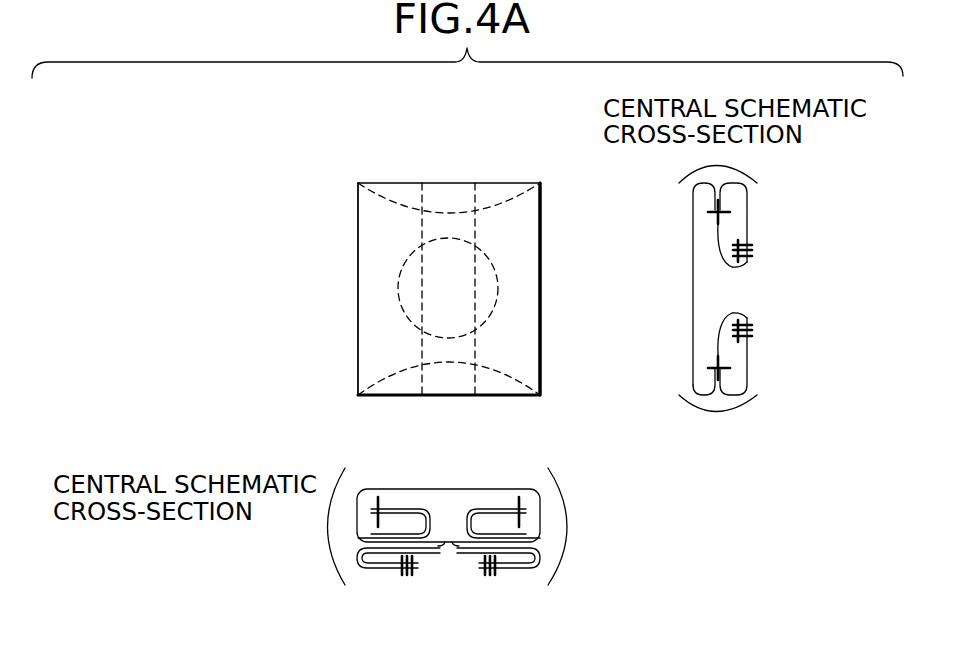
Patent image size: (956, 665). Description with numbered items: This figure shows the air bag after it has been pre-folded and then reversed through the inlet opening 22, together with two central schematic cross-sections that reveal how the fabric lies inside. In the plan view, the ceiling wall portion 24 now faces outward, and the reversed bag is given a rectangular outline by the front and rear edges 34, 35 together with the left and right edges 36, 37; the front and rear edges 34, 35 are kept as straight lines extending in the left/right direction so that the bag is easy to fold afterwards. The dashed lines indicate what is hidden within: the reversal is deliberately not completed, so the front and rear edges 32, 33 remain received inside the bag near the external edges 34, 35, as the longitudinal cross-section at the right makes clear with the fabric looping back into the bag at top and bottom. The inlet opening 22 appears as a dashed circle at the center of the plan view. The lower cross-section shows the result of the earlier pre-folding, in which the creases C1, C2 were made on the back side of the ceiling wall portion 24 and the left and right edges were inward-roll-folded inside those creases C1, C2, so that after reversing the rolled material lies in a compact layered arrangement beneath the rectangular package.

The ceiling wall portion 24 is at (365, 228).
The front edge 34 is at (378, 183).
The front edge 32 is at (450, 217).
The right edge 37 is at (543, 204).
The inlet opening 22 is at (497, 265).
The left edge 36 is at (358, 320).
The rear edge 35 is at (386, 391).
The rear edge 33 is at (452, 362).
The crease C1 is at (466, 524).
The crease C2 is at (357, 527).